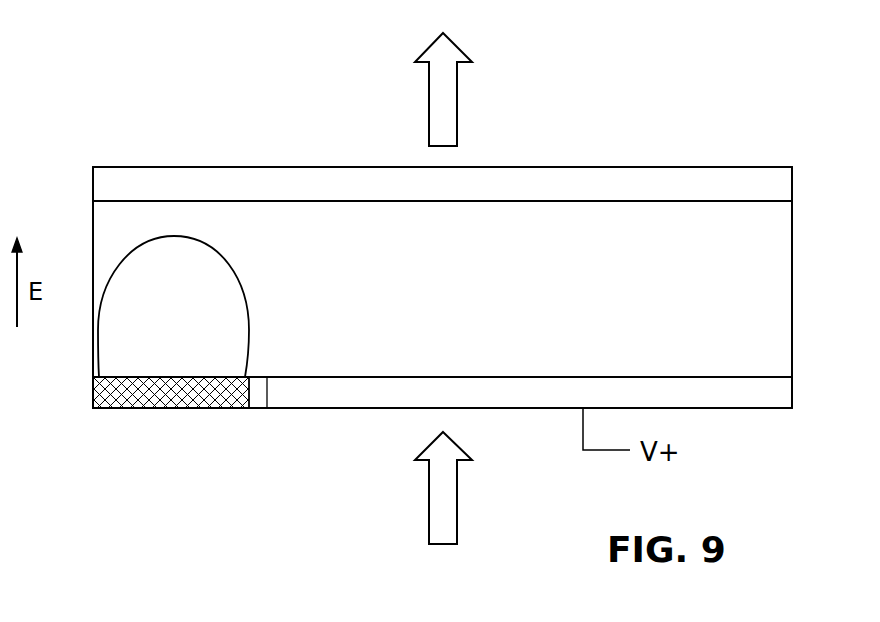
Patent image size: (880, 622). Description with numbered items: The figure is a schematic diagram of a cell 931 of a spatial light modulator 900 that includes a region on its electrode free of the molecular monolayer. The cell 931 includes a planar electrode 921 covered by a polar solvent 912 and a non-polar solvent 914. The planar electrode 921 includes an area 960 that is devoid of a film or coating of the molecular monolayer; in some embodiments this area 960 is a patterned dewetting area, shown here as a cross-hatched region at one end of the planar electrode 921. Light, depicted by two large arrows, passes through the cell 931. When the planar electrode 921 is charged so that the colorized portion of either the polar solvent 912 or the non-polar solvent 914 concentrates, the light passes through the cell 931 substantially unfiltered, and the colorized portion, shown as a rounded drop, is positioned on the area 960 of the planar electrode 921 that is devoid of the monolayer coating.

The spatial light modulator 900 is at (686, 102).
The polar solvent 912 is at (115, 218).
The non-polar solvent 914 is at (175, 360).
The planar electrode 921 is at (93, 390).
The cell 931 is at (770, 266).
The area devoid of molecular monolayer 960 is at (120, 375).